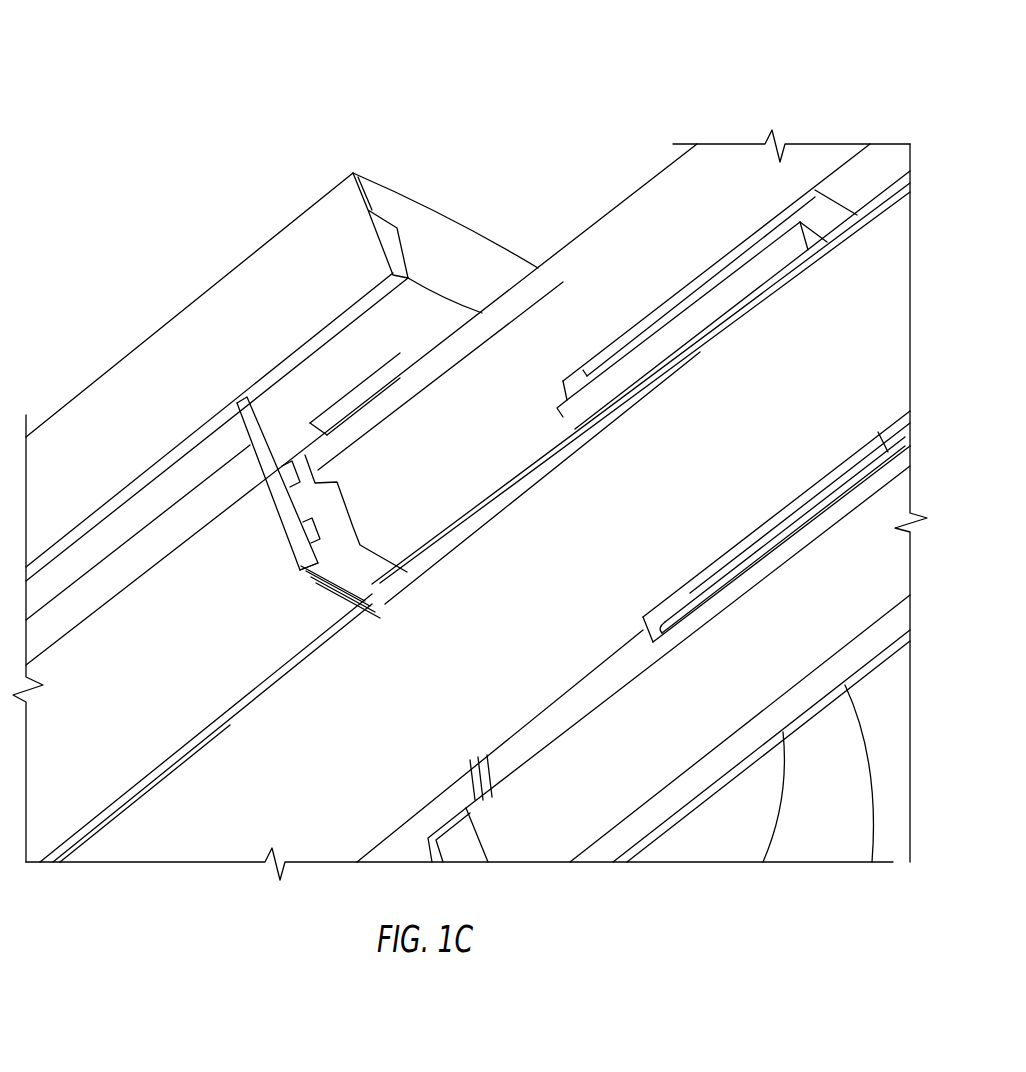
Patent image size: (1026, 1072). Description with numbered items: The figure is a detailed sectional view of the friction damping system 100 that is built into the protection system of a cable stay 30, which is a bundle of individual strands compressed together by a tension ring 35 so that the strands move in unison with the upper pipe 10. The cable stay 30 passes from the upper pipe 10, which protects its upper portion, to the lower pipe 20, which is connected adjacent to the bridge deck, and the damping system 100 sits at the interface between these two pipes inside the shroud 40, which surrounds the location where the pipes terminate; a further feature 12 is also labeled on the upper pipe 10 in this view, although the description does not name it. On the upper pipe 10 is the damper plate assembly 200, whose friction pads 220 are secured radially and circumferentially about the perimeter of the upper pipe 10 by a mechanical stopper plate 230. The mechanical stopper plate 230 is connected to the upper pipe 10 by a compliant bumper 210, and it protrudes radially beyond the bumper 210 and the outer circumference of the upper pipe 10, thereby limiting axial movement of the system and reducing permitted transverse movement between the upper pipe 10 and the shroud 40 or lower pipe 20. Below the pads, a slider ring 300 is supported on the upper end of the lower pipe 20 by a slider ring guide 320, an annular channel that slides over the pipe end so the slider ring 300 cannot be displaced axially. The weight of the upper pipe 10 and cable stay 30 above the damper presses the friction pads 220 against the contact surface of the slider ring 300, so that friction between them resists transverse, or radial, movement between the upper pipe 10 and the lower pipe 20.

The damping system 100 is at (146, 152).
The upper pipe 10 is at (638, 225).
The rail edge 12 is at (340, 463).
The lower pipe 20 is at (153, 545).
The cable stay 30 is at (776, 526).
The tension ring 35 is at (730, 236).
The shroud 40 is at (260, 246).
The damper plate assembly 200 is at (322, 415).
The bumper 210 is at (341, 535).
The friction pads 220 is at (293, 506).
The mechanical stopper plate 230 is at (303, 573).
The slider ring 300 is at (280, 427).
The slider ring guide 320 is at (272, 502).